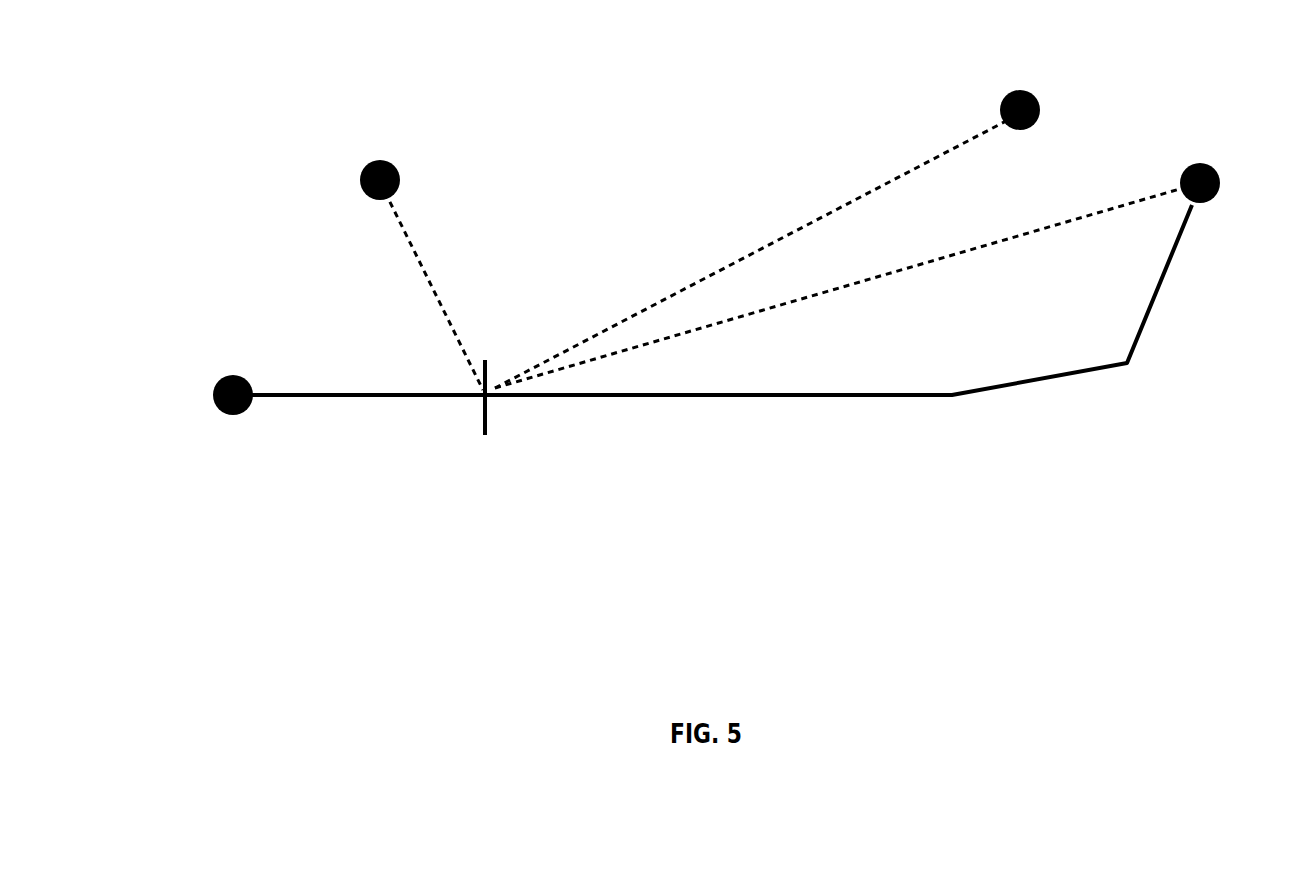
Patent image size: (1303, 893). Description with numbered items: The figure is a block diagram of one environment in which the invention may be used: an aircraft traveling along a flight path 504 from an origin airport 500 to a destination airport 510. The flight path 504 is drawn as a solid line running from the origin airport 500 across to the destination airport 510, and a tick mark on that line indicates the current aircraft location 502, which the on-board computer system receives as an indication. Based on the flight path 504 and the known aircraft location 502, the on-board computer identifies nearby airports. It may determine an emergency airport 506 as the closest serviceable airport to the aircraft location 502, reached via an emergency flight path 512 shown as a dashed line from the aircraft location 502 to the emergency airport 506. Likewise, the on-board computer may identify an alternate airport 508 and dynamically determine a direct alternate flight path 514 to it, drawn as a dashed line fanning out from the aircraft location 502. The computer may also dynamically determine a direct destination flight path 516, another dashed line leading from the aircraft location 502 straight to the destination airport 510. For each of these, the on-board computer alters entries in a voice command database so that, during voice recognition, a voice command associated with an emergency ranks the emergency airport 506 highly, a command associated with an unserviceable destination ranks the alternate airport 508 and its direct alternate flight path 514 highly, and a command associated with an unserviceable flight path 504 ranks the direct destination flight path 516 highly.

The origin airport 500 is at (232, 413).
The aircraft location 502 is at (484, 426).
The flight path 504 is at (892, 398).
The emergency airport 506 is at (375, 160).
The alternate airport 508 is at (1015, 88).
The destination airport 510 is at (1198, 162).
The emergency flight path 512 is at (418, 266).
The direct alternate flight path 514 is at (828, 222).
The direct destination flight path 516 is at (907, 267).